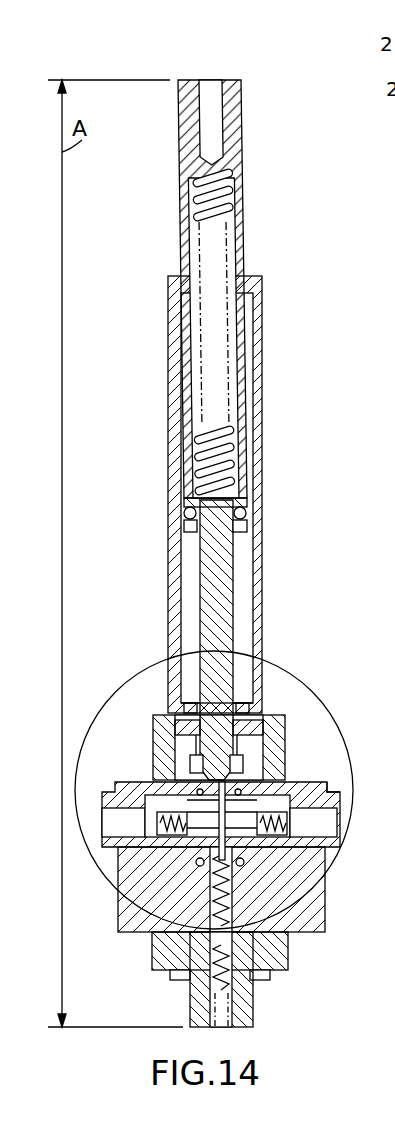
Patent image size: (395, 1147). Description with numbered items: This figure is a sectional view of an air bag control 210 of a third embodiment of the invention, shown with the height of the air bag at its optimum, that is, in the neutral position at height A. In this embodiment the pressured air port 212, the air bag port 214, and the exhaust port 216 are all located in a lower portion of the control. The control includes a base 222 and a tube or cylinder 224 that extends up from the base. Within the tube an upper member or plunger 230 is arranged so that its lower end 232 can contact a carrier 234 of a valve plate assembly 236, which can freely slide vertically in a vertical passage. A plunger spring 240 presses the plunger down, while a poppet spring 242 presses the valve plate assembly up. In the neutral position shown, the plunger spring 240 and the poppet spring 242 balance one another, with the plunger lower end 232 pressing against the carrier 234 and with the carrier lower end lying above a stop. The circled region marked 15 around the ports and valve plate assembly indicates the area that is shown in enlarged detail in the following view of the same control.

The control 210 is at (170, 62).
The plunger spring 240 is at (197, 207).
The tube or cylinder 224 is at (262, 556).
The upper member or plunger 230 is at (238, 595).
The lower end of plunger 232 is at (248, 738).
The carrier 234 is at (258, 752).
The valve plate assembly 236 is at (205, 782).
The pressured air port 212 is at (108, 818).
The air bag port 214 is at (330, 813).
The detail view circle 15 is at (303, 664).
The base 222 is at (325, 920).
The poppet spring 242 is at (252, 986).
The exhaust port 216 is at (233, 1027).